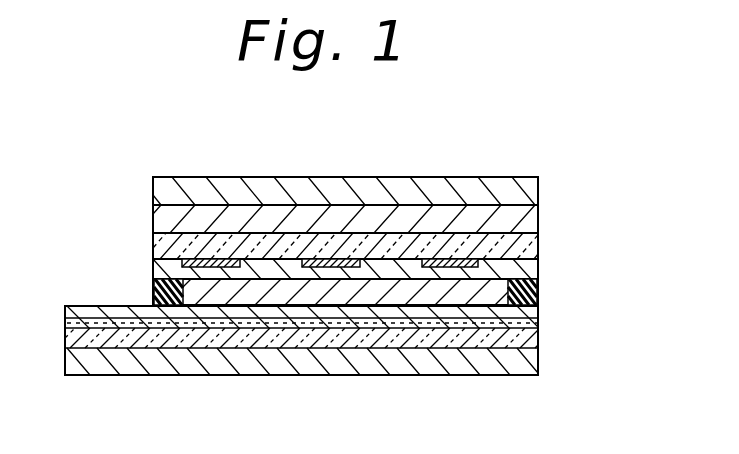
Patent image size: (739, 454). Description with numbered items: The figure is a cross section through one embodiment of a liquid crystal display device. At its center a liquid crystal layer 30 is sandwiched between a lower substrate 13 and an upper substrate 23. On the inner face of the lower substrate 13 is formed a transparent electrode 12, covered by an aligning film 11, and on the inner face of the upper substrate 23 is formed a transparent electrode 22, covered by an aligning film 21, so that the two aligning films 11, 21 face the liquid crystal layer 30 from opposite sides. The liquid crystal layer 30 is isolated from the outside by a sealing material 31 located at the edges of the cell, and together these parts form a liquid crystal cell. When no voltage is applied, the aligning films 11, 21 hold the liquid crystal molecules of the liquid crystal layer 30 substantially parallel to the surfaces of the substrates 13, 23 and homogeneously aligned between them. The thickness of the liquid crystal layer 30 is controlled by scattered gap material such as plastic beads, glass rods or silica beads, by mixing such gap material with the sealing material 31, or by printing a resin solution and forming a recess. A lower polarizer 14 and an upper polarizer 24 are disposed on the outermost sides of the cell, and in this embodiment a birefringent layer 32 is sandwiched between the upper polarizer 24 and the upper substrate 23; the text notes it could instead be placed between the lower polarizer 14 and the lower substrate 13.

The aligning film 11 is at (538, 314).
The transparent electrode 12 is at (538, 327).
The lower substrate 13 is at (538, 345).
The lower polarizer 14 is at (507, 363).
The aligning film 21 is at (540, 268).
The transparent electrode 22 is at (460, 262).
The upper substrate 23 is at (523, 245).
The upper polarizer 24 is at (522, 198).
The liquid crystal layer 30 is at (432, 290).
The sealing material 31 is at (540, 293).
The birefringent layer 32 is at (528, 220).